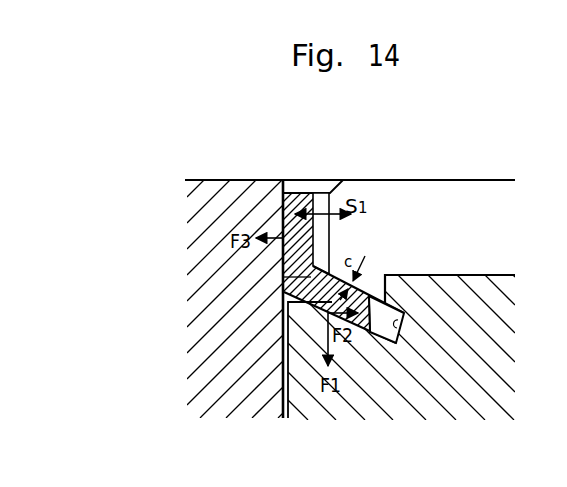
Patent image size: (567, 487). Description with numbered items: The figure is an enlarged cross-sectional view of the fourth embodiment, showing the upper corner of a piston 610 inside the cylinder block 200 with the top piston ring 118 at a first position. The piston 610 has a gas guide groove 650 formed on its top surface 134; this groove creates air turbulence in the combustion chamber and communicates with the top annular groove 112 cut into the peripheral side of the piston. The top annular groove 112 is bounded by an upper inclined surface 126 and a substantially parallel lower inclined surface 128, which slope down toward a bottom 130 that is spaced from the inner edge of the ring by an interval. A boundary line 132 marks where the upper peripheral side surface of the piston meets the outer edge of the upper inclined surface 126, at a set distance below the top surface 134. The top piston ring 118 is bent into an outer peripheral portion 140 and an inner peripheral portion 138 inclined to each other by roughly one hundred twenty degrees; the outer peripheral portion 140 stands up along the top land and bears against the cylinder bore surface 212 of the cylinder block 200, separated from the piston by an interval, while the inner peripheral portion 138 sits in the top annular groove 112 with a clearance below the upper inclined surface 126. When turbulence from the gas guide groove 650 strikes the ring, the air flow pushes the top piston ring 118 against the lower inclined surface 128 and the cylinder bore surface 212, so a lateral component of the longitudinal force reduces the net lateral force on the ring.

The outer peripheral portion 140 is at (281, 218).
The top surface 134 is at (343, 180).
The gas guide groove 650 is at (418, 200).
The top piston ring 118 is at (281, 258).
The boundary line 132 is at (283, 277).
The cylinder block 200 is at (222, 306).
The inner peripheral portion 138 is at (288, 303).
The upper inclined surface 126 is at (366, 294).
The piston 610 is at (467, 277).
The cylinder bore surface 212 is at (289, 373).
The lower inclined surface 128 is at (368, 331).
The top annular groove 112 is at (385, 338).
The bottom 130 is at (399, 337).